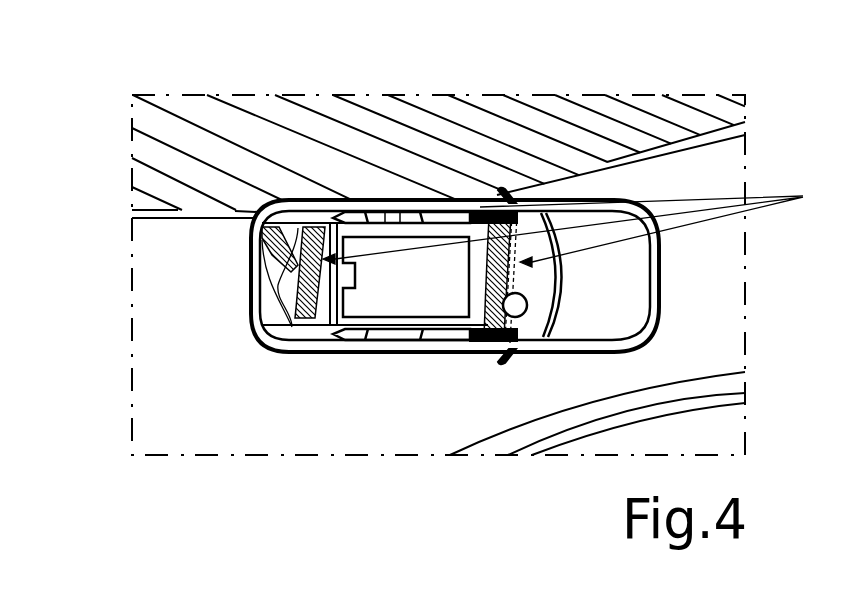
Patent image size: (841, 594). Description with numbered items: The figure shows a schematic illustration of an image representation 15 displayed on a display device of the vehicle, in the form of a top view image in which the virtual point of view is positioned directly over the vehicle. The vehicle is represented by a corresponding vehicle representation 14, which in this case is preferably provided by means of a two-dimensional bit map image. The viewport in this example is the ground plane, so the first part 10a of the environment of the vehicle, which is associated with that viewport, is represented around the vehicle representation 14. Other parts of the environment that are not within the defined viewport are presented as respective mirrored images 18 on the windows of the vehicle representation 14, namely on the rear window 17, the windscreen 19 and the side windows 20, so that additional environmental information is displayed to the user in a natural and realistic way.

The first part of the environment 10a is at (142, 143).
The vehicle representation 14 is at (467, 222).
The image representation 15 is at (213, 135).
The rear window 17 is at (298, 228).
The mirrored image 18 is at (580, 222).
The windscreen 19 is at (532, 288).
The side windows 20 is at (391, 215).